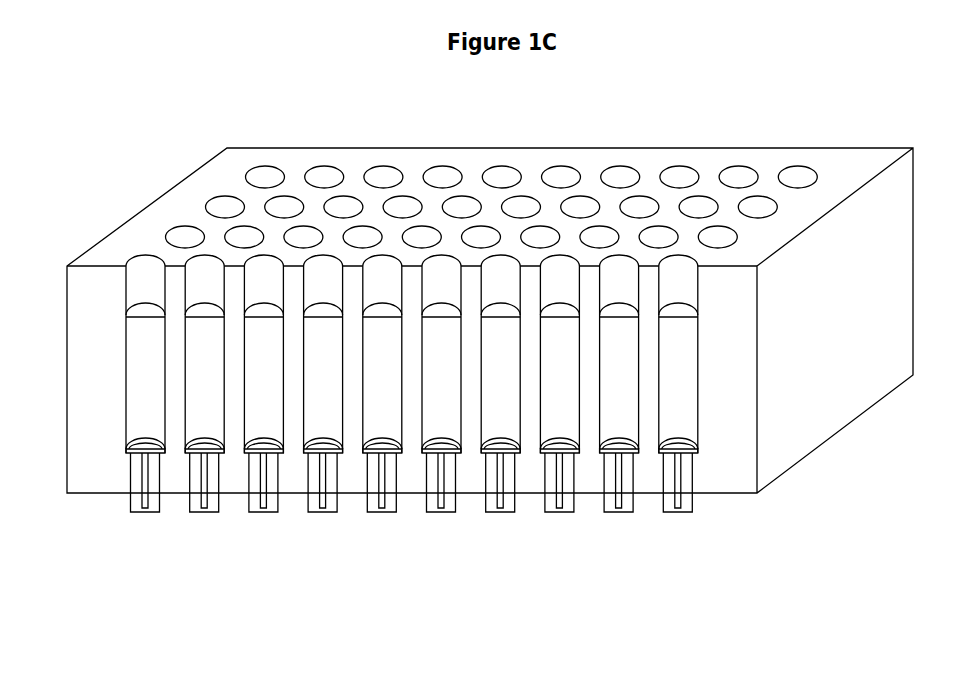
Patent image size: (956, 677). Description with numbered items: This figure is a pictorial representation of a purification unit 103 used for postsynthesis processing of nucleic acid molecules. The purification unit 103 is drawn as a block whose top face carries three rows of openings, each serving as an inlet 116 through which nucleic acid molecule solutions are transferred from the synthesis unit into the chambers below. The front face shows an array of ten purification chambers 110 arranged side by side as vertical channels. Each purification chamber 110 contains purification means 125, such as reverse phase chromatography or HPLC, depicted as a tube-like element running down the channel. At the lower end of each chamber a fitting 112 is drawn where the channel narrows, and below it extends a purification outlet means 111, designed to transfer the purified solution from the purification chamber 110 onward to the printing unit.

The purification unit 103 is at (67, 358).
The purification chamber 110 is at (707, 285).
The inlet 116 is at (265, 177).
The purification means 125 is at (687, 375).
The bottom fittings 112 is at (700, 455).
The purification outlet means 111 is at (697, 514).